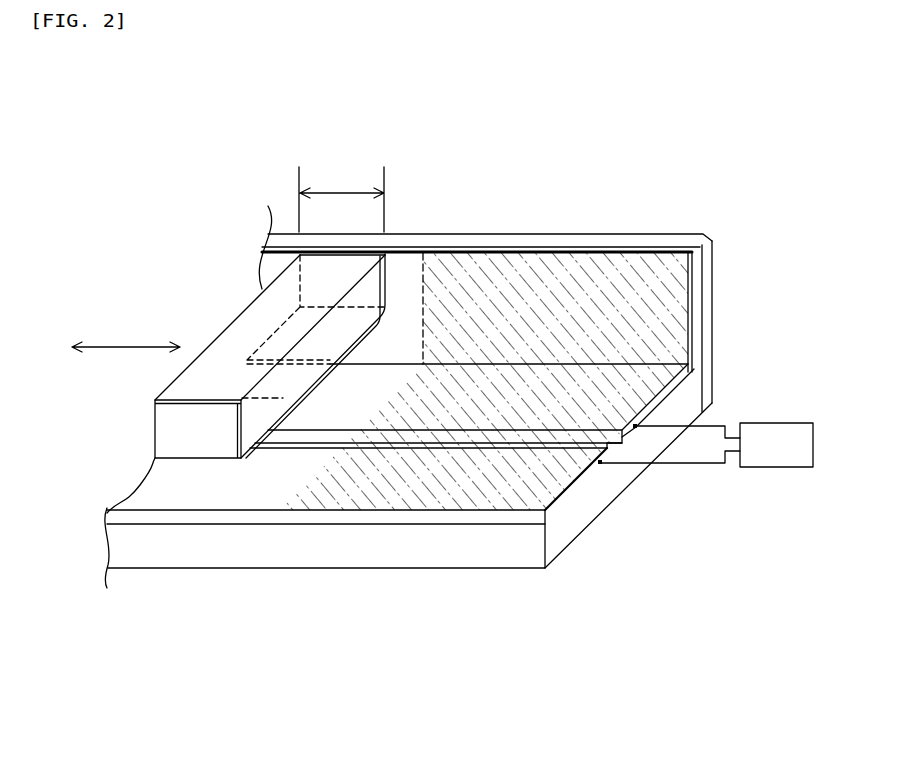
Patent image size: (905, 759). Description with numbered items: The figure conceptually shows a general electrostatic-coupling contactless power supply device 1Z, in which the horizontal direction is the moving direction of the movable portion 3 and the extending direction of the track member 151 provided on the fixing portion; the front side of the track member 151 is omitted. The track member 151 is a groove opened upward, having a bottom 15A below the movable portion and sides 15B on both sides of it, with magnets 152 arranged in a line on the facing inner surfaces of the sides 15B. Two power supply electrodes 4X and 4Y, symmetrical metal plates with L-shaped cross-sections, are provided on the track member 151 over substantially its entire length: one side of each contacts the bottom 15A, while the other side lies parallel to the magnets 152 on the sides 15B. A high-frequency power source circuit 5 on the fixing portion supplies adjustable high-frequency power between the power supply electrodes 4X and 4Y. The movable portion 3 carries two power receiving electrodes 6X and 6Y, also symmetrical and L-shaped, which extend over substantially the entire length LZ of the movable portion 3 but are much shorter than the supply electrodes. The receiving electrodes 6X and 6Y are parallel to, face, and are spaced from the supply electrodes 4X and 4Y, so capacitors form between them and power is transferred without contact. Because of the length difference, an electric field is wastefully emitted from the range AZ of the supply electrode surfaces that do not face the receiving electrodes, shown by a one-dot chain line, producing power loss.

The general electrostatic-coupling contactless power supply device 1Z is at (144, 108).
The movable portion 3 is at (240, 323).
The power receiving electrode 6X is at (388, 276).
The power receiving electrode 6Y is at (178, 431).
The entire length of the movable portion LZ is at (341, 199).
The magnets 152 is at (706, 275).
The sides 15B is at (714, 308).
The bottom 15A is at (605, 482).
The track member 151 is at (576, 571).
The power supply electrode 4X is at (667, 390).
The power supply electrode 4Y is at (570, 492).
The high-frequency power source circuit 5 is at (786, 457).
The range of the surfaces of the power supply electrodes AZ is at (438, 483).